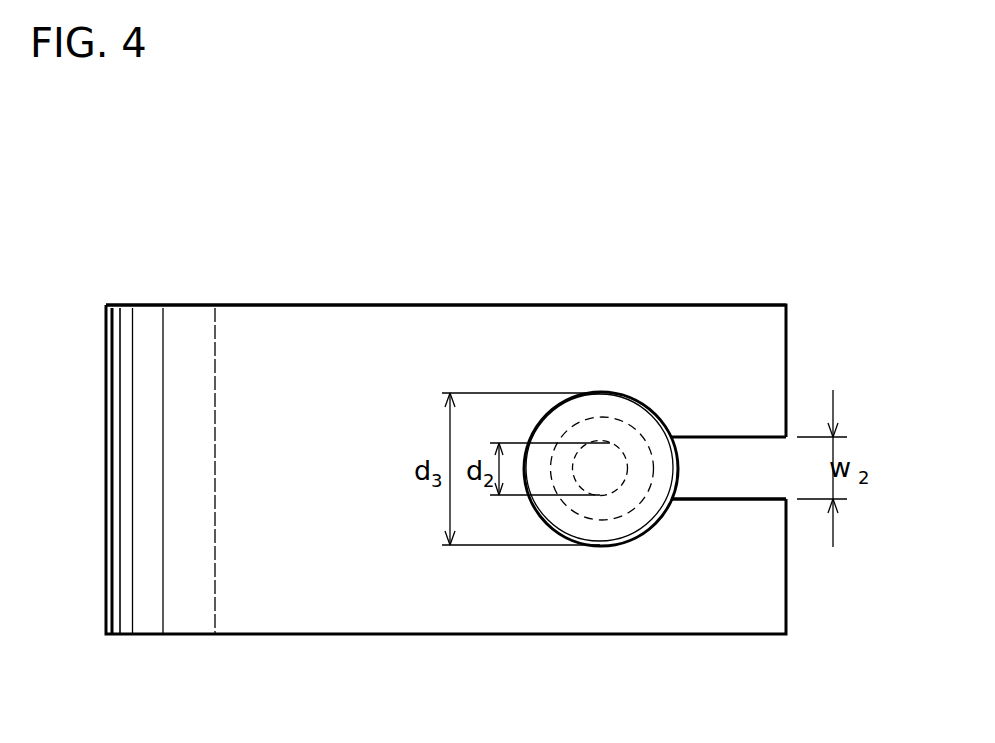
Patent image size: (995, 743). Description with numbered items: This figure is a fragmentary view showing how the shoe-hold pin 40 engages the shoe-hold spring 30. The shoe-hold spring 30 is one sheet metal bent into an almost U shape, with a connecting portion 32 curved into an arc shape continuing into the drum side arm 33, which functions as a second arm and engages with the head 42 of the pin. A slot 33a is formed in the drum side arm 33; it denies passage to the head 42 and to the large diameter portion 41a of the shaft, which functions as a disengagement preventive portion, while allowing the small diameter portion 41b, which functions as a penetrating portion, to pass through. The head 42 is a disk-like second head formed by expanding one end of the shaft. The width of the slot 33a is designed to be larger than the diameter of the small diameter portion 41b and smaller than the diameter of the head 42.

The shoe-hold spring 30 is at (112, 305).
The connecting portion 32 is at (108, 470).
The drum side arm 33 is at (358, 304).
The slot 33a is at (704, 499).
The shoe-hold pin 40 is at (680, 460).
The large diameter portion 41a is at (658, 435).
The small diameter portion 41b is at (613, 418).
The head 42 is at (603, 546).